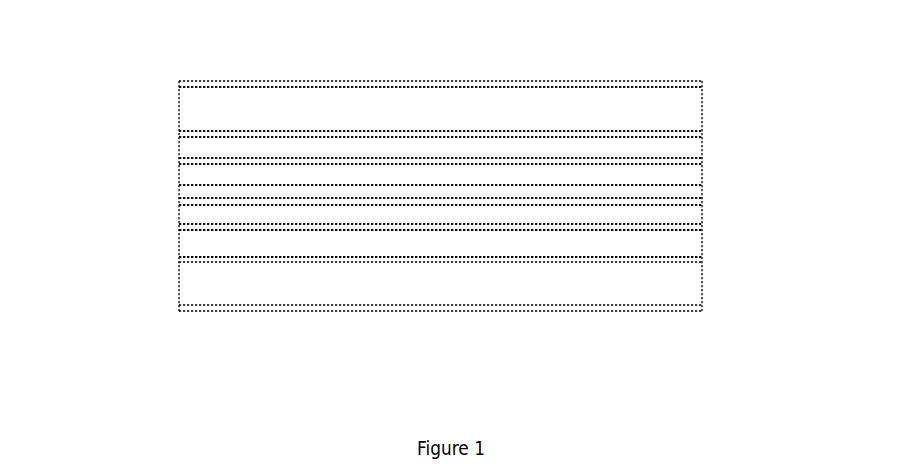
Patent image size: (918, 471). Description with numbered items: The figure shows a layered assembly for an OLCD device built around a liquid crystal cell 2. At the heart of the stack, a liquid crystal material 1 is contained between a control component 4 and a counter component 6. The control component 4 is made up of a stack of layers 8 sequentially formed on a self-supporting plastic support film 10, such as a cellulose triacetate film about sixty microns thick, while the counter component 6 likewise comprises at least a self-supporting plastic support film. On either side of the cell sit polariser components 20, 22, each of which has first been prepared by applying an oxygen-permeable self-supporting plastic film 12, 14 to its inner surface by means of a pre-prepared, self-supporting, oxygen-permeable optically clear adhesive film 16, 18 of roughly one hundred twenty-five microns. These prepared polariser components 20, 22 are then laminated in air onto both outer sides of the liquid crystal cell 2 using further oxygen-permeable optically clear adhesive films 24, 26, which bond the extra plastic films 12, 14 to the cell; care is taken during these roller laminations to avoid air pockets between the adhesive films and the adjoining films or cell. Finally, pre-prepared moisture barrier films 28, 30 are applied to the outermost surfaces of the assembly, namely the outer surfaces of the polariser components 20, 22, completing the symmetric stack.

The liquid crystal material 1 is at (702, 195).
The liquid crystal cell 2 is at (178, 165).
The control component 4 is at (178, 200).
The counter component 6 is at (702, 180).
The stack of layers 8 is at (702, 202).
The self-supporting plastic support film 10 is at (702, 220).
The oxygen-permeable self-supporting plastic film 12 is at (702, 150).
The oxygen-permeable self-supporting plastic film 14 is at (178, 238).
The optically clear adhesive film 16 is at (702, 161).
The optically clear adhesive film 18 is at (178, 229).
The polariser component 20 is at (702, 112).
The polariser component 22 is at (178, 260).
The optically clear adhesive film 24 is at (702, 132).
The optically clear adhesive film 26 is at (178, 247).
The moisture barrier film 28 is at (653, 78).
The moisture barrier film 30 is at (178, 313).